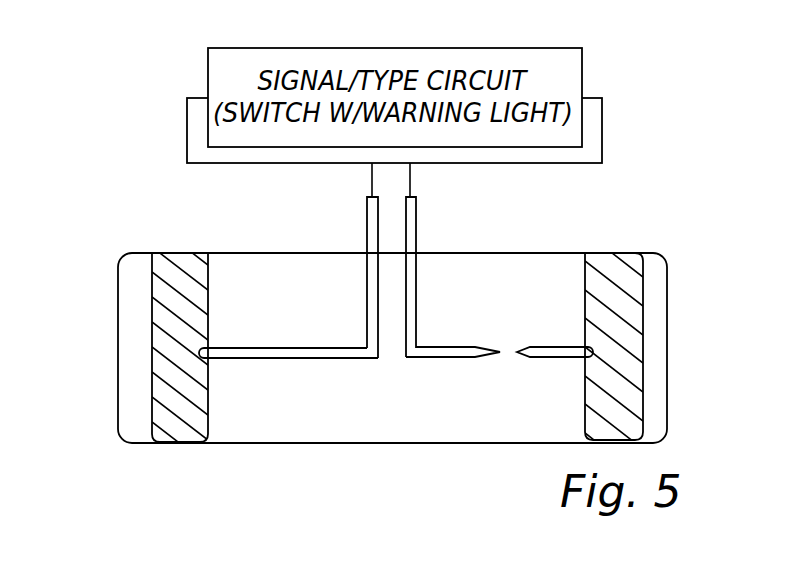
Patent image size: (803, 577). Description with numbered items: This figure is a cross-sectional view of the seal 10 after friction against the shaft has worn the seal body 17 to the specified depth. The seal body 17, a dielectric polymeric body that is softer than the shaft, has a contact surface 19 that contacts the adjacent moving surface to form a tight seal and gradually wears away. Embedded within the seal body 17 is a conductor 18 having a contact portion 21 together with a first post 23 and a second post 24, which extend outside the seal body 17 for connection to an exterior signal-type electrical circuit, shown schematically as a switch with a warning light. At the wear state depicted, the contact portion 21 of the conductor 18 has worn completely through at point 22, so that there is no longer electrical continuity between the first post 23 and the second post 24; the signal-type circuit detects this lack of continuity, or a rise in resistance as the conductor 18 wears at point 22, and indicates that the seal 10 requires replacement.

The seal 10 is at (95, 279).
The seal body 17 is at (177, 277).
The conductor 18 is at (290, 330).
The contact surface 19 is at (223, 278).
The contact portion 21 is at (337, 347).
The point 22 is at (508, 350).
The first post 23 is at (342, 264).
The second post 24 is at (418, 213).